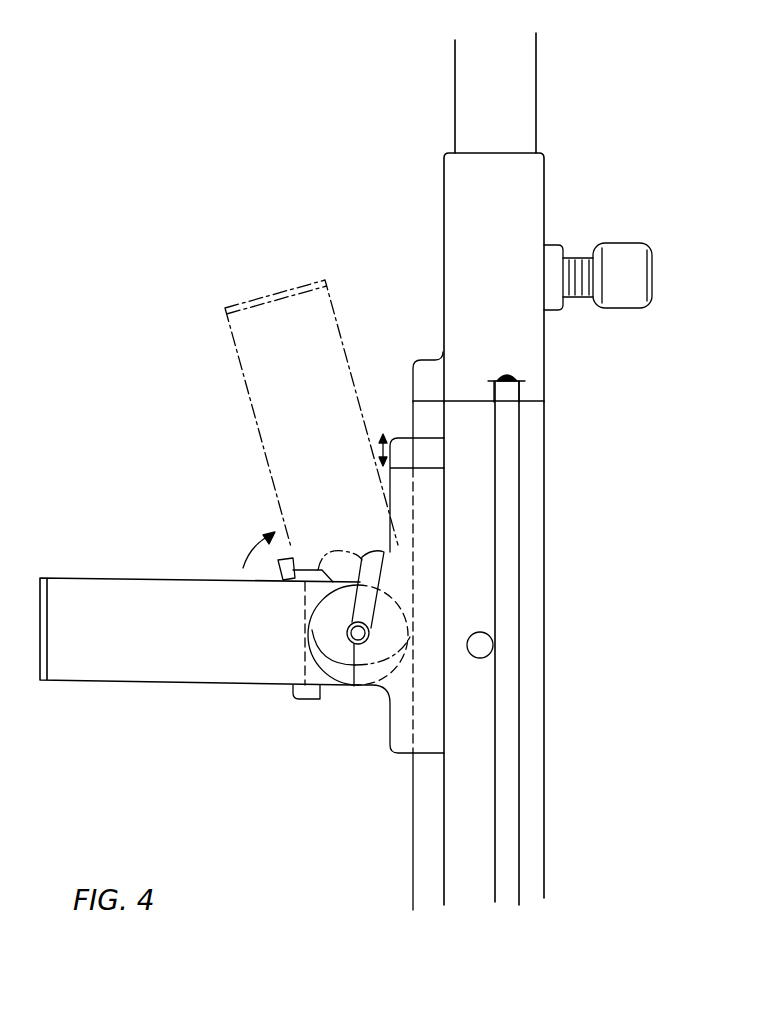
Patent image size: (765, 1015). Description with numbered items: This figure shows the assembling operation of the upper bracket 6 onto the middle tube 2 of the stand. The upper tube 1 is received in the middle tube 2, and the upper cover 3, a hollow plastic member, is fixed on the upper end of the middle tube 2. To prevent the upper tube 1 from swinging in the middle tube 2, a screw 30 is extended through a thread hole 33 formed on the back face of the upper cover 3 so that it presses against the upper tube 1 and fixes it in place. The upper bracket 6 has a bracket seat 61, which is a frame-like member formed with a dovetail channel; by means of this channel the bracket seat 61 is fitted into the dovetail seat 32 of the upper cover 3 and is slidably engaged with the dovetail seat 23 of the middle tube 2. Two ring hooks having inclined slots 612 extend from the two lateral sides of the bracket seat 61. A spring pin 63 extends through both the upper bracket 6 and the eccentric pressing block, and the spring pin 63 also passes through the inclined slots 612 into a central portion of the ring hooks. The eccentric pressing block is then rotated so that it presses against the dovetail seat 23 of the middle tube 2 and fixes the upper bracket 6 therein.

The upper tube 1 is at (522, 92).
The middle tube 2 is at (535, 658).
The upper cover 3 is at (530, 362).
The upper bracket 6 is at (122, 595).
The dovetail seat 23 is at (423, 853).
The screw 30 is at (633, 255).
The dovetail seat 32 is at (420, 370).
The thread hole 33 is at (565, 250).
The bracket seat 61 is at (393, 752).
The spring pin 63 is at (352, 686).
The inclined slots 612 is at (323, 700).